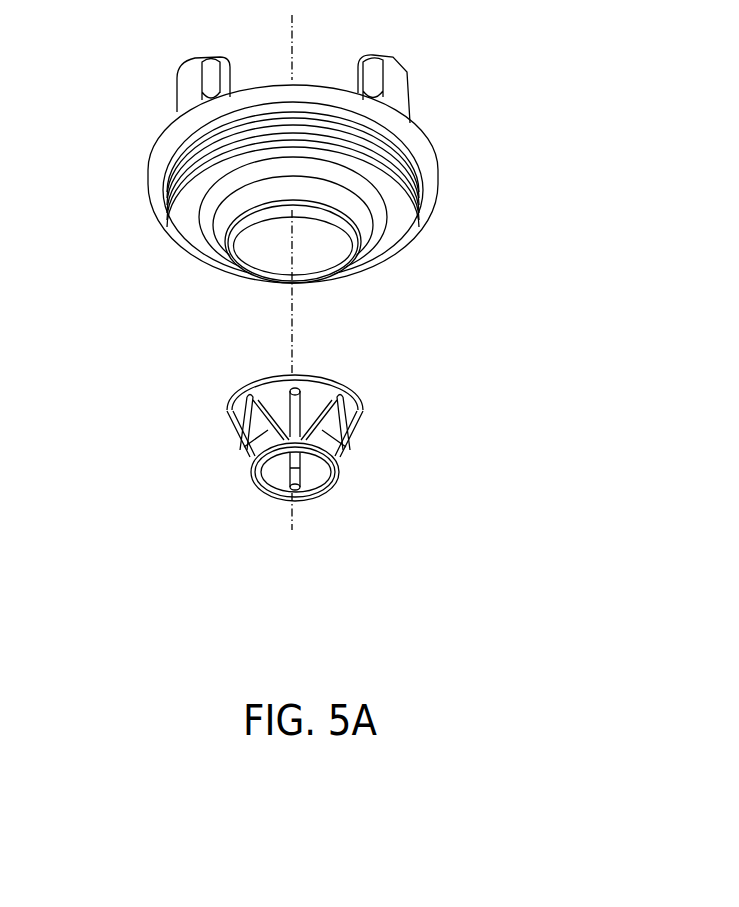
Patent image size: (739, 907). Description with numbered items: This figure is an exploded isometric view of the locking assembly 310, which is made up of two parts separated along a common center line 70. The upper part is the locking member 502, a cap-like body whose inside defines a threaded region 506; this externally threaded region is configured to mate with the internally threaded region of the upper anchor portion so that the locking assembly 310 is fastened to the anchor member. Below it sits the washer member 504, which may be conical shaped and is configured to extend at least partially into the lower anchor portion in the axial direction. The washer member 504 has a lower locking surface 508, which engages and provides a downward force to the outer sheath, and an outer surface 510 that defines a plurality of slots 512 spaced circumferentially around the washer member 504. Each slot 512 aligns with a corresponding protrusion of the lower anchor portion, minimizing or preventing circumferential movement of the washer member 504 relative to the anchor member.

The central axis 70 is at (288, 43).
The locking assembly 310 is at (538, 163).
The locking member 502 is at (170, 123).
The washer member 504 is at (235, 390).
The threaded region 506 is at (193, 164).
The lower locking surface 508 is at (281, 457).
The outer surface 510 is at (242, 428).
The slots 512 is at (300, 410).